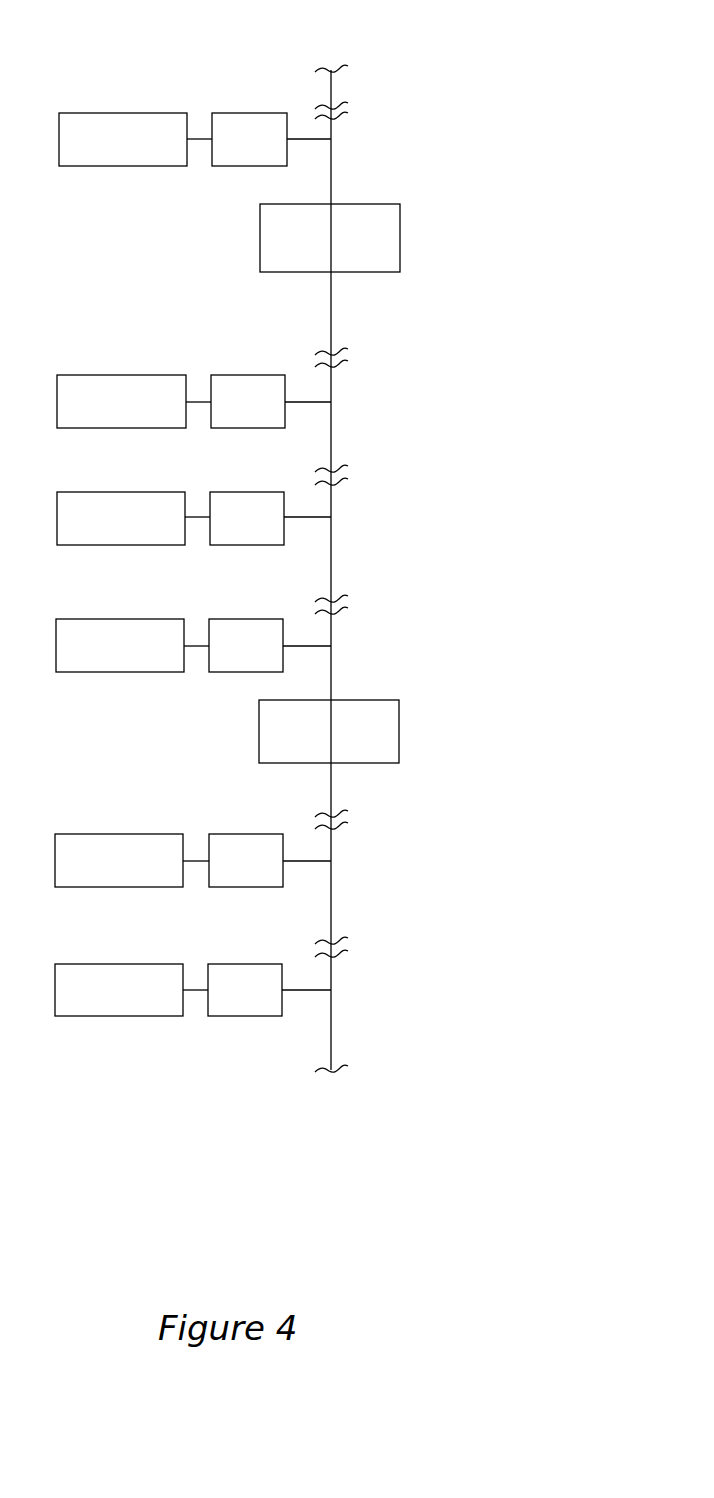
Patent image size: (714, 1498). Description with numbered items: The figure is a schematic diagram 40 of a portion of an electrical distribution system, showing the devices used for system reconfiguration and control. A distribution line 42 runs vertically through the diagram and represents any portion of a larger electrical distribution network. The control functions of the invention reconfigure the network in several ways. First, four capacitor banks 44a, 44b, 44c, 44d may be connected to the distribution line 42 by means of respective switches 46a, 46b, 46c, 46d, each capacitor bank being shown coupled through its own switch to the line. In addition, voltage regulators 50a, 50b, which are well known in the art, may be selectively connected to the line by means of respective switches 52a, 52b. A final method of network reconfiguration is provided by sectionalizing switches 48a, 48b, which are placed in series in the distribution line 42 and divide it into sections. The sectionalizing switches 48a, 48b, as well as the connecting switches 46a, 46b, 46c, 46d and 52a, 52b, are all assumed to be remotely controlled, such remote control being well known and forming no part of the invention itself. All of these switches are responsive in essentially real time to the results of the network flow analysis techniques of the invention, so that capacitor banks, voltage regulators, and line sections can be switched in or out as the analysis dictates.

The schematic diagram 40 is at (241, 30).
The distribution line 42 is at (331, 87).
The capacitor bank 44a is at (154, 113).
The capacitor bank 44b is at (152, 375).
The capacitor bank 44c is at (153, 492).
The capacitor bank 44d is at (151, 834).
The switch 46a is at (229, 113).
The switch 46b is at (225, 375).
The switch 46c is at (224, 492).
The switch 46d is at (222, 834).
The sectionalizing switch 48a is at (260, 239).
The sectionalizing switch 48b is at (259, 740).
The voltage regulator 50a is at (153, 619).
The voltage regulator 50b is at (151, 964).
The switch 52a is at (223, 619).
The switch 52b is at (222, 964).